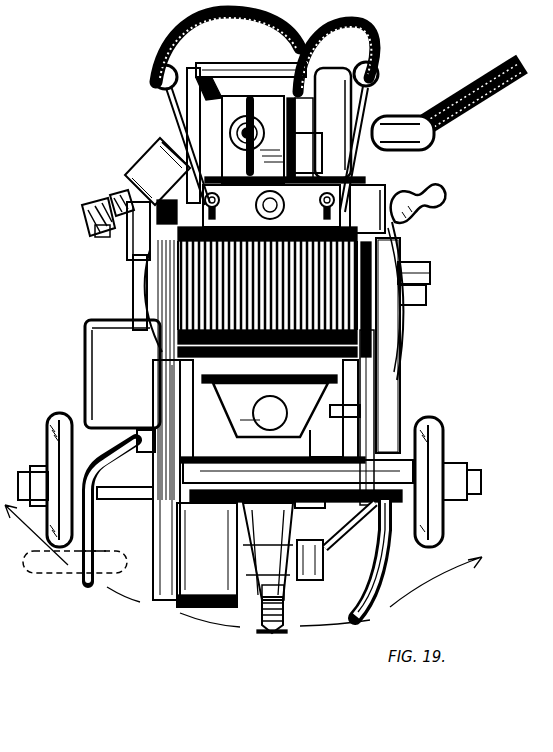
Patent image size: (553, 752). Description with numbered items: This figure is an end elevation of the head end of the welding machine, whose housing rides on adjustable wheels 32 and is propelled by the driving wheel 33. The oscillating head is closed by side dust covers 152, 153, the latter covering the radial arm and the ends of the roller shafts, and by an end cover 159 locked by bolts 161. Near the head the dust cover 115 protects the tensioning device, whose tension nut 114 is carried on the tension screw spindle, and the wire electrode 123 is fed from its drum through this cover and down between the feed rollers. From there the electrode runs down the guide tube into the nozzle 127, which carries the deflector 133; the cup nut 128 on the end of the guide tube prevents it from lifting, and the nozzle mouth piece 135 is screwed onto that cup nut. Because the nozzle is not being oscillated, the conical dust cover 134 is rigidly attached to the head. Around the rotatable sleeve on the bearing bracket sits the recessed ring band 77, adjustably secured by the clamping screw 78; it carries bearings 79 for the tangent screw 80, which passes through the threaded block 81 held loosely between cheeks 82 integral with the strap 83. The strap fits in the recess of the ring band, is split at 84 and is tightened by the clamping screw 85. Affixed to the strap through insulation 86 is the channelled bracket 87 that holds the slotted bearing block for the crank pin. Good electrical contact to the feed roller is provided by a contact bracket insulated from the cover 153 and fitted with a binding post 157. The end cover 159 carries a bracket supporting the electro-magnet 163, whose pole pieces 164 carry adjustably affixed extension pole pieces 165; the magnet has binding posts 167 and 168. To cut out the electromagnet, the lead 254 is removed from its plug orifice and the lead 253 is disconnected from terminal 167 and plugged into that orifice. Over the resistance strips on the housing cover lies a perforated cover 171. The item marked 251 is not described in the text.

The lead 253 is at (212, 30).
The lead 254 is at (382, 30).
The electric cable 251 is at (470, 113).
The binding post 167 is at (153, 76).
The binding post 168 is at (380, 73).
The wire electrode 123 is at (244, 76).
The bearings 79 is at (187, 112).
The dust cover 115 is at (252, 140).
The tension nut 114 is at (246, 160).
The perforated cover 171 is at (333, 123).
The end cover 159 is at (271, 206).
The bolts 161 is at (220, 200).
The side dust cover 152 is at (367, 209).
The side dust cover 153 is at (155, 230).
The cheeks 82 is at (140, 168).
The threaded block 81 is at (162, 150).
The tangent screw 80 is at (125, 197).
The binding post 157 is at (108, 238).
The strap 83 is at (140, 291).
The recessed ring band 77 is at (400, 250).
The split 84 is at (432, 276).
The clamping screw 85 is at (428, 300).
The clamping screw 78 is at (432, 176).
The electro-magnet 163 is at (313, 322).
The pole pieces 164 is at (163, 373).
The conical dust cover 134 is at (269, 406).
The insulation 86 is at (342, 413).
The channelled bracket 87 is at (318, 446).
The extension pole pieces 165 is at (165, 517).
The nozzle 127 is at (268, 551).
The deflector 133 is at (306, 504).
The cup nut 128 is at (305, 545).
The nozzle mouth piece 135 is at (292, 572).
The driving wheel 33 is at (285, 613).
The adjustable wheels 32 is at (52, 421).